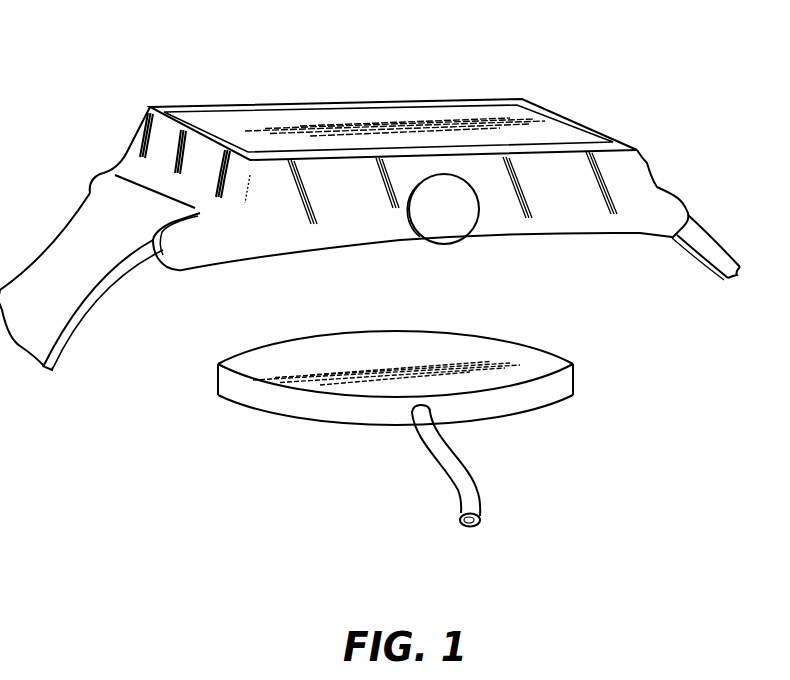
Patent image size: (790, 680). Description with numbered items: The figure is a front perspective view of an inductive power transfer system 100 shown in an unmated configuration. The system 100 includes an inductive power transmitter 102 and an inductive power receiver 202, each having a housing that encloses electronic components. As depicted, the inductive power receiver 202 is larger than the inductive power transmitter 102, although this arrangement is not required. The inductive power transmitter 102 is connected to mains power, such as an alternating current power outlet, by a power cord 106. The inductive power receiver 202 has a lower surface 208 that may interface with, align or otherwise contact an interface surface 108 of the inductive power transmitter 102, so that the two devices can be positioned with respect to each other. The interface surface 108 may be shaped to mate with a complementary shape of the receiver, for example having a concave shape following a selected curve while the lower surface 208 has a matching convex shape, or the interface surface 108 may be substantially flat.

The inductive power transfer system 100 is at (80, 48).
The inductive power receiver 202 is at (127, 152).
The lower surface 208 is at (537, 233).
The inductive power transmitter 102 is at (510, 420).
The interface surface 108 is at (537, 370).
The power cord 106 is at (460, 524).